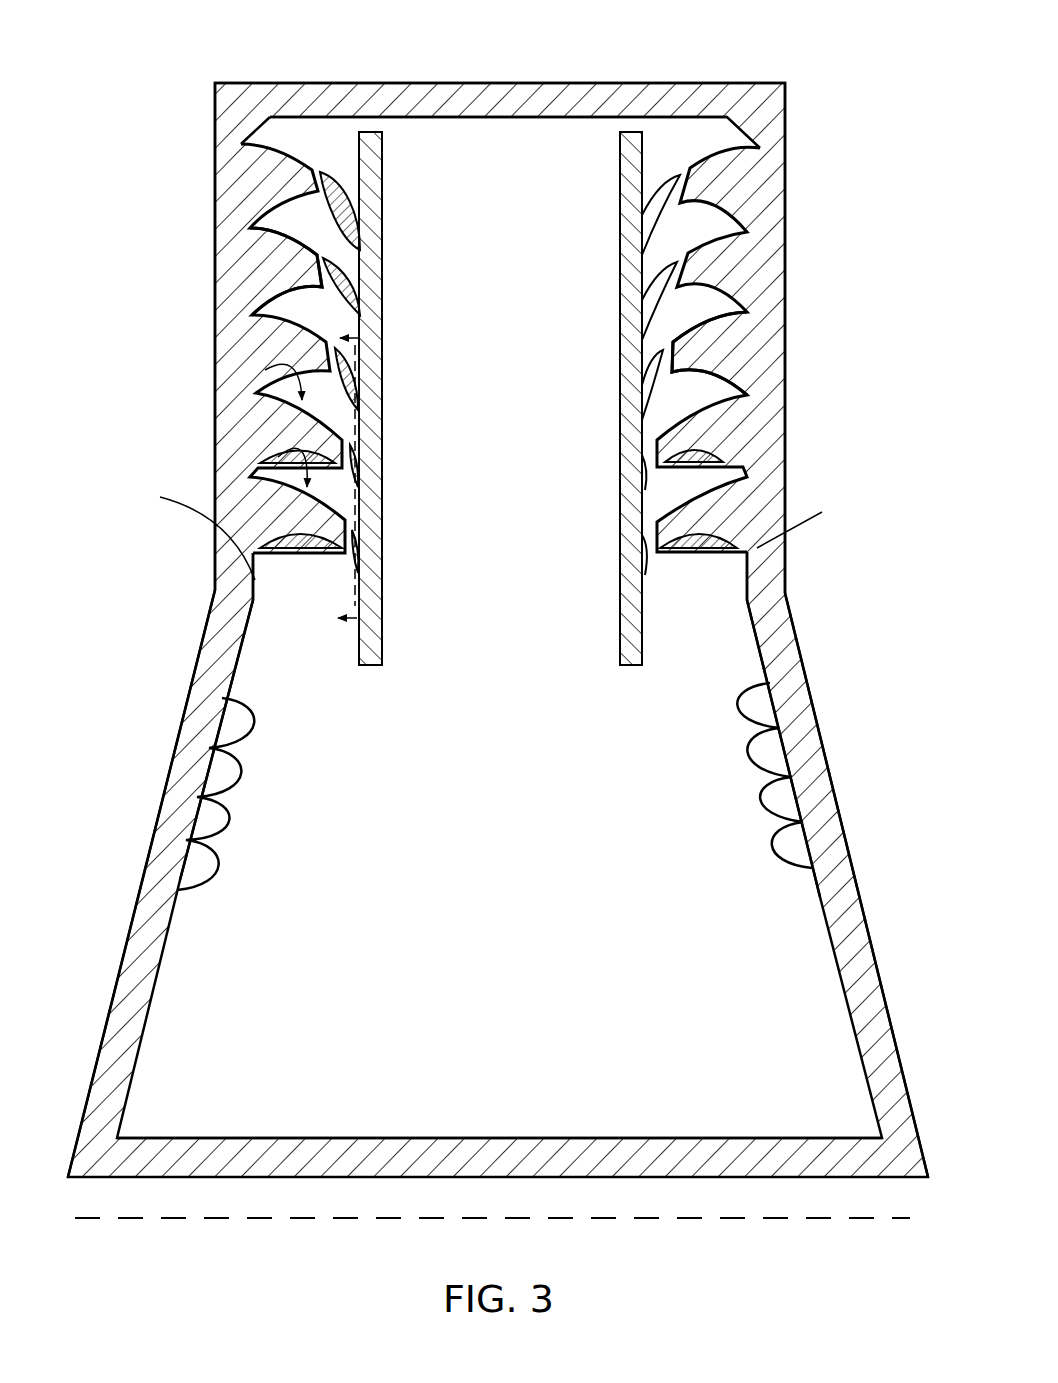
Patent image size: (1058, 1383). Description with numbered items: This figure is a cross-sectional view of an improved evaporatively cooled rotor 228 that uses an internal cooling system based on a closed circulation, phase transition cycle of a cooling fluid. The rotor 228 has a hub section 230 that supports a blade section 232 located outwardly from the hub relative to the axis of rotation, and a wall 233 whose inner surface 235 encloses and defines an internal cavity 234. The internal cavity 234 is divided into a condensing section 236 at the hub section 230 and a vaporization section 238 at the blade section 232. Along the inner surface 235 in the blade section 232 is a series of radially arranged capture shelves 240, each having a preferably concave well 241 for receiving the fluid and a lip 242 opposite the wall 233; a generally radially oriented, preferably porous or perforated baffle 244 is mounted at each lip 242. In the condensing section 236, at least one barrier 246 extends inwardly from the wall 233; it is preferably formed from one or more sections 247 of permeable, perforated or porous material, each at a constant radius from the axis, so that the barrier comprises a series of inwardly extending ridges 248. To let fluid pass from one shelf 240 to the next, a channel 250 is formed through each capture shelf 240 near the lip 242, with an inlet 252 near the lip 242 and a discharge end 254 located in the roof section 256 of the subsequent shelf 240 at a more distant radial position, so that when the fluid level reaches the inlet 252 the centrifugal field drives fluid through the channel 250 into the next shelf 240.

The rotor 228 is at (668, 43).
The hub section 230 is at (880, 980).
The blade section 232 is at (786, 292).
The wall 233 is at (197, 710).
The internal cavity 234 is at (445, 712).
The inner surface 235 is at (757, 628).
The condensing section 236 is at (516, 903).
The vaporization section 238 is at (516, 235).
The capture shelf 240 is at (265, 370).
The well 241 is at (250, 310).
The lip 242 is at (383, 360).
The baffle 244 is at (383, 592).
The barrier 246 is at (442, 820).
The sections of permeable, perforated or porous material 247 is at (183, 867).
The inwardly extending ridges 248 is at (800, 850).
The channel 250 is at (620, 187).
The inlet 252 is at (383, 215).
The discharge end 254 is at (620, 358).
The roof section 256 is at (705, 403).